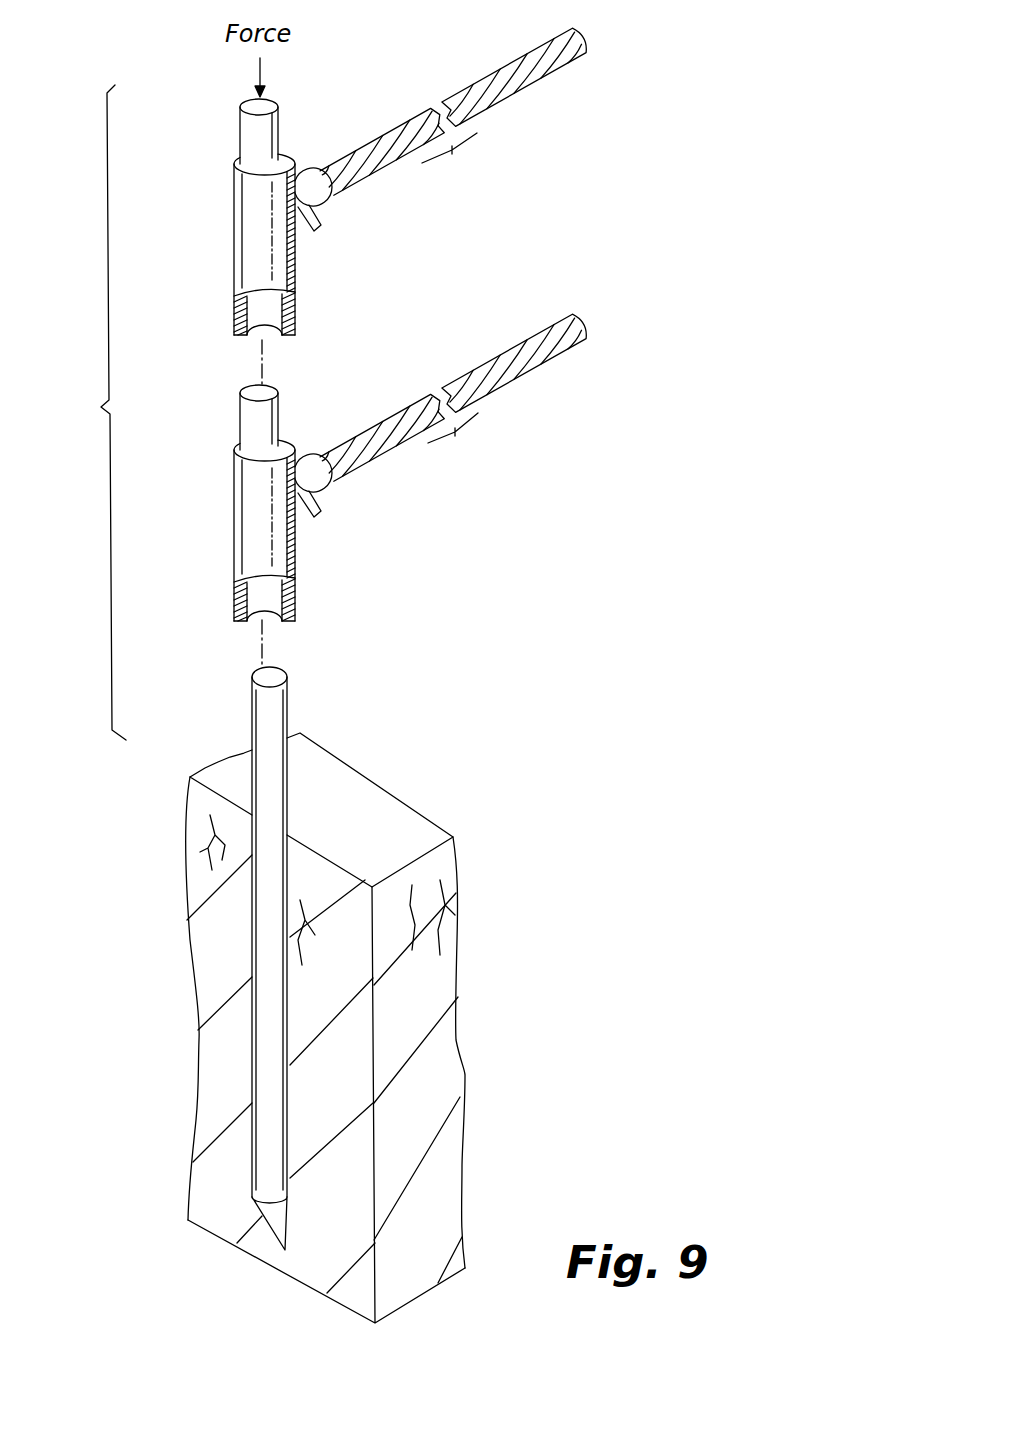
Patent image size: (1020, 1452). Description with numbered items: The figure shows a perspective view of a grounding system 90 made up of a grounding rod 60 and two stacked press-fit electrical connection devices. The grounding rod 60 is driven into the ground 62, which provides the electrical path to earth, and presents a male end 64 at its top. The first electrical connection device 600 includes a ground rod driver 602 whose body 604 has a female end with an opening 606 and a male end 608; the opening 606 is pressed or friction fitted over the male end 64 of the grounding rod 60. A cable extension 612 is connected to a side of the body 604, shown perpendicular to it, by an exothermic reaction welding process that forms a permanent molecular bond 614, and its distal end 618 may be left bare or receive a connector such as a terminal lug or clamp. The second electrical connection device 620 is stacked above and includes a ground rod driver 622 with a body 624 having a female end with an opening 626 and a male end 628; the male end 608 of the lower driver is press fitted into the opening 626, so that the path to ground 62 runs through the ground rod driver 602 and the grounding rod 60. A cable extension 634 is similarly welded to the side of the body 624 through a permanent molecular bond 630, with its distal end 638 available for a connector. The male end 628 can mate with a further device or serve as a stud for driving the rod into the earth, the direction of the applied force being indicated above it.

The grounding system 90 is at (95, 402).
The grounding rod 60 is at (233, 946).
The ground 62 is at (402, 810).
The male end 64 is at (252, 680).
The first electrical connection device 600 is at (337, 411).
The ground rod driver 602 is at (232, 578).
The body 604 is at (237, 493).
The opening 606 is at (288, 619).
The male end 608 is at (245, 423).
The cable extension 612 is at (462, 442).
The permanent molecular bond 614 is at (306, 490).
The distal end 618 is at (573, 338).
The second electrical connection device 620 is at (336, 107).
The ground rod driver 622 is at (232, 286).
The body 624 is at (237, 200).
The opening 626 is at (271, 337).
The male end 628 is at (238, 128).
The permanent molecular bond 630 is at (304, 212).
The cable extension 634 is at (455, 160).
The distal end 638 is at (566, 58).